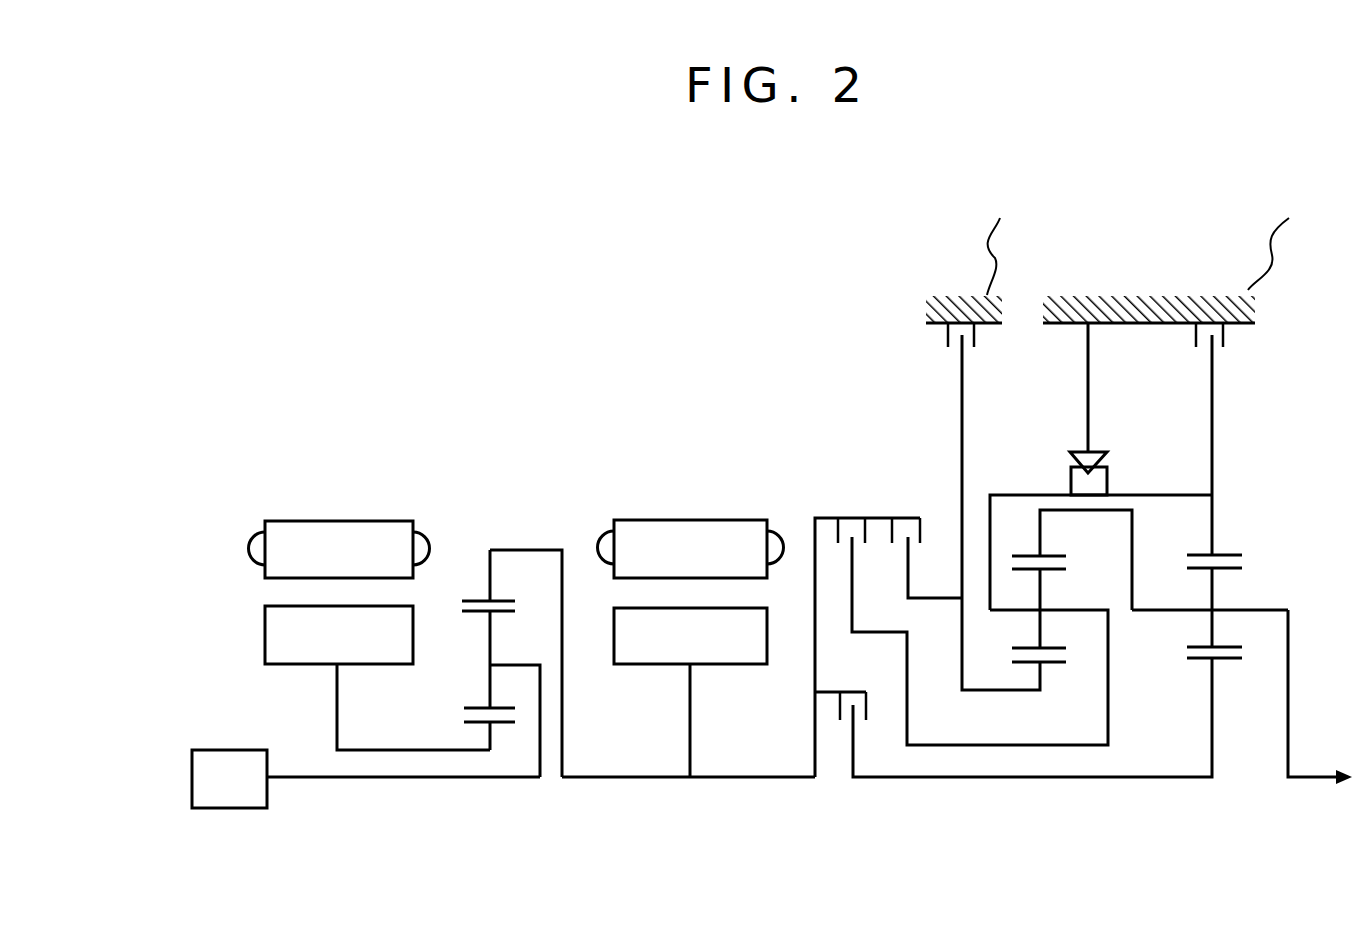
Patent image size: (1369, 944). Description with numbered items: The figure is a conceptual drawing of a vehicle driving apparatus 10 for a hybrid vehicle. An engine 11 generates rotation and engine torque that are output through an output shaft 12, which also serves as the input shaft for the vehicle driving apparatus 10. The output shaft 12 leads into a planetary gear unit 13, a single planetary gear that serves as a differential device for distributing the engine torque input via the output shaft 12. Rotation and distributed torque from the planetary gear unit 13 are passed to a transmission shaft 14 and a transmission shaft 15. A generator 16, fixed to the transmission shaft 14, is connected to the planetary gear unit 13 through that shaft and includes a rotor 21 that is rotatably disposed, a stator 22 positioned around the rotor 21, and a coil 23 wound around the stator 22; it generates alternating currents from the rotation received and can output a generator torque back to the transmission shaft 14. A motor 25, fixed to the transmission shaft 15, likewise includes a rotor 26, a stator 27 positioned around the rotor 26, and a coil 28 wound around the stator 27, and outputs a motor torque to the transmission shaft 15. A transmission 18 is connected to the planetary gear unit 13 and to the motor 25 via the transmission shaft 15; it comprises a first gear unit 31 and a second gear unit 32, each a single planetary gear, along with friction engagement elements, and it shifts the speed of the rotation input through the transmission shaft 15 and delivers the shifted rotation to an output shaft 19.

The vehicle driving apparatus 10 is at (786, 402).
The engine 11 is at (202, 749).
The output shaft 12 is at (362, 779).
The planetary gear unit 13 is at (534, 493).
The transmission shaft 14 is at (371, 749).
The transmission shaft 15 is at (655, 779).
The generator 16 is at (299, 542).
The transmission 18 is at (1080, 533).
The output shaft 19 is at (1300, 785).
The rotor 21 is at (272, 622).
The stator 22 is at (380, 530).
The coil 23 is at (255, 538).
The motor 25 is at (677, 584).
The rotor 26 is at (639, 666).
The stator 27 is at (730, 526).
The coil 28 is at (604, 540).
The first gear unit 31 is at (1019, 508).
The second gear unit 32 is at (1250, 482).